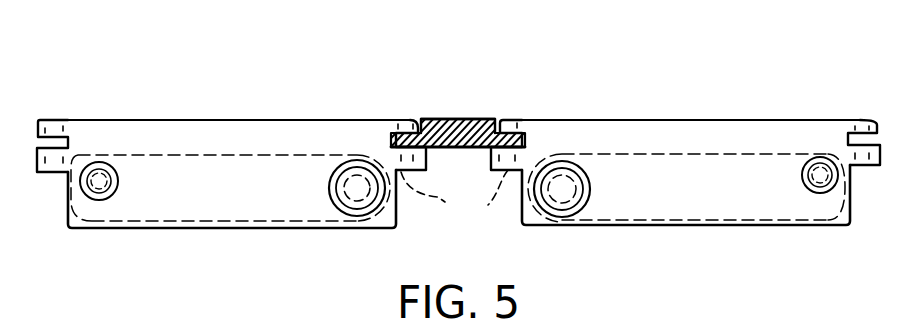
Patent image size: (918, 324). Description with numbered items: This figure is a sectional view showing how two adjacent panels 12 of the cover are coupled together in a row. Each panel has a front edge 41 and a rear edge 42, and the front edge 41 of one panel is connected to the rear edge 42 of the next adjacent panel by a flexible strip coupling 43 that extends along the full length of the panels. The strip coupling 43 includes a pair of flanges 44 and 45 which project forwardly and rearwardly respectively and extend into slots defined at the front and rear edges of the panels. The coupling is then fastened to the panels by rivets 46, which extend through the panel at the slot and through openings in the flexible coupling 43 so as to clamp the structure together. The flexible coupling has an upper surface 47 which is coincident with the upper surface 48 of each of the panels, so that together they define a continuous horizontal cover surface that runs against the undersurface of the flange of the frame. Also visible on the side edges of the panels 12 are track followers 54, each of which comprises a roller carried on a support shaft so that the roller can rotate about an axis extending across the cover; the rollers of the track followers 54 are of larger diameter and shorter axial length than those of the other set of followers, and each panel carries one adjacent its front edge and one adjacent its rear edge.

The panels 12 is at (668, 64).
The front edge 41 is at (54, 118).
The rear edge 42 is at (408, 118).
The flexible strip coupling 43 is at (458, 118).
The flange 44 is at (392, 139).
The flange 45 is at (521, 140).
The rivets 46 is at (454, 195).
The upper surface 47 is at (479, 118).
The upper surface 48 is at (199, 119).
The track followers 54 is at (327, 205).